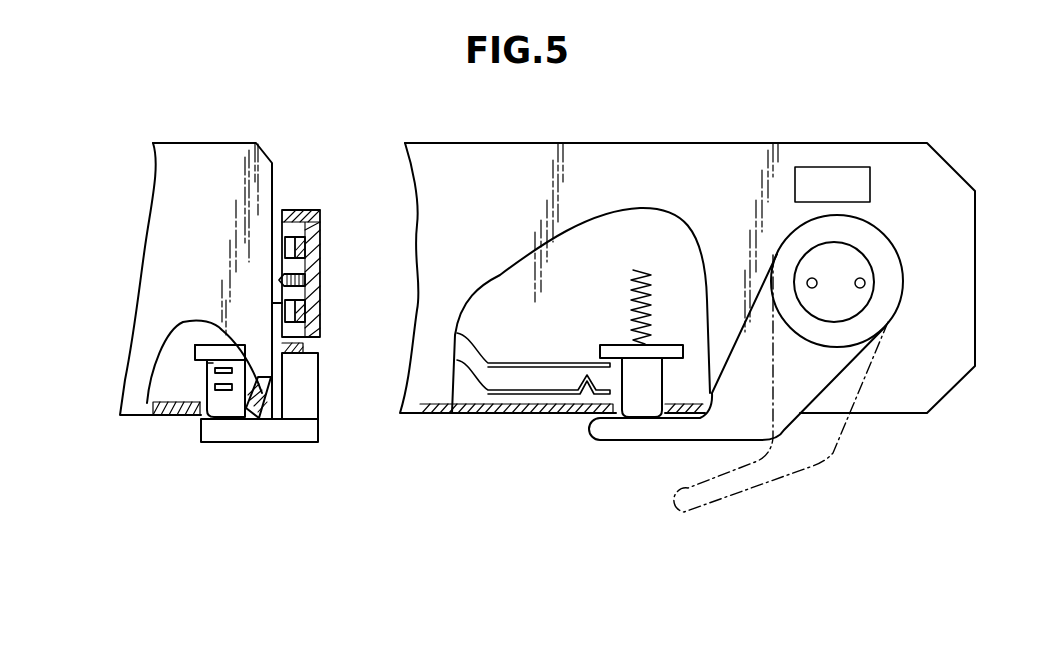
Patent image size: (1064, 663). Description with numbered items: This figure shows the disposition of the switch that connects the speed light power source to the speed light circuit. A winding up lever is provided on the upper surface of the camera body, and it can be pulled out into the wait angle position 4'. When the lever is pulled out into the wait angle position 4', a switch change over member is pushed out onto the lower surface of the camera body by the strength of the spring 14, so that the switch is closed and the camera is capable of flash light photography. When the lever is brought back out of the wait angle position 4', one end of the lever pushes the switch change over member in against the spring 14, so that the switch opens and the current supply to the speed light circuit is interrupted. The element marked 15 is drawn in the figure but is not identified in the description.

The wait angle position of the winding up lever 4' is at (781, 387).
The spring 14 is at (633, 298).
The pivot screw assembly 15 is at (292, 258).